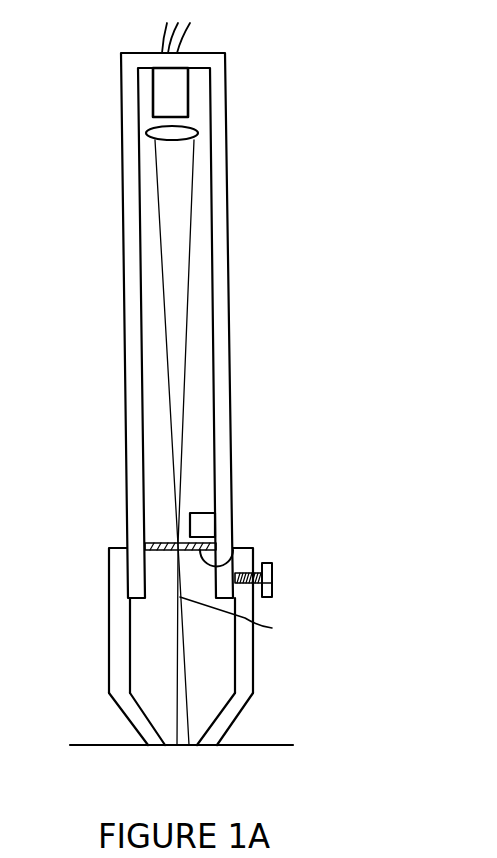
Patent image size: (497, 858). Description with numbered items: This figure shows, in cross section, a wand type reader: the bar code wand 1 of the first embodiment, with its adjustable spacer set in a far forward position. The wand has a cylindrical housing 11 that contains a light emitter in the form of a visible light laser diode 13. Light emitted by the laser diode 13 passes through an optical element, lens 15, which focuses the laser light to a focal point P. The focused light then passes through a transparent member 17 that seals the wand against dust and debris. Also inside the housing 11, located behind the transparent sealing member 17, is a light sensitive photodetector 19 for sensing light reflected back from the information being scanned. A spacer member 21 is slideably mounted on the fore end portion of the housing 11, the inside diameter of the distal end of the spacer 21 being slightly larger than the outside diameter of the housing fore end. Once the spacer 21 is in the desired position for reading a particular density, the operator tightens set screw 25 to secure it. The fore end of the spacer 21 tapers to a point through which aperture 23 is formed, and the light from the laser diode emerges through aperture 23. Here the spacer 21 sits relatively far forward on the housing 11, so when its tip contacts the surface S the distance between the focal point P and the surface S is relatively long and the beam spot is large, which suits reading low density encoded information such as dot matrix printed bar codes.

The bar code wand 1 is at (104, 259).
The cylindrical housing 11 is at (227, 403).
The visible light laser diode 13 is at (153, 88).
The lens 15 is at (197, 130).
The transparent member 17 is at (237, 548).
The photodetector 19 is at (200, 512).
The spacer member 21 is at (108, 587).
The aperture 23 is at (196, 745).
The set screw 25 is at (273, 580).
The focal point P is at (235, 618).
The surface S is at (97, 745).